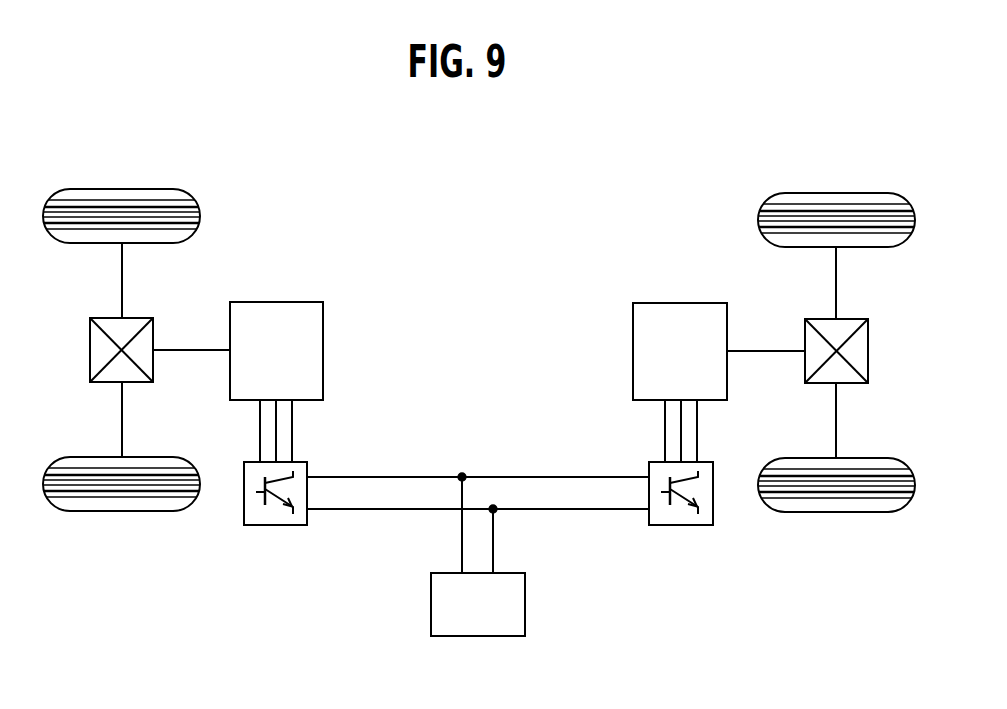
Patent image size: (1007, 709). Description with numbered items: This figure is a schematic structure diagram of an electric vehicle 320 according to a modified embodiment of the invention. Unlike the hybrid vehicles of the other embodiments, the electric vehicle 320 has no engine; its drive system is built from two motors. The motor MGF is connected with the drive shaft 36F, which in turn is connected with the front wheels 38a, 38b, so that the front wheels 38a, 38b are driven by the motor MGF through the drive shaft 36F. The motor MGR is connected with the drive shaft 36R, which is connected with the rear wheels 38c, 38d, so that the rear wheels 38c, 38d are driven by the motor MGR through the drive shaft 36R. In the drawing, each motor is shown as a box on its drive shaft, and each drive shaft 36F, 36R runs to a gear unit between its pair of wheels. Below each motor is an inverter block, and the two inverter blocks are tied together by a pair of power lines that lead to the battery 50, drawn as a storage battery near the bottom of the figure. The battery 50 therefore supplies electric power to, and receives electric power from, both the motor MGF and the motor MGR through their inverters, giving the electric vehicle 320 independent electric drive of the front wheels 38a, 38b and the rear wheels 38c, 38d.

The electric vehicle 320 is at (564, 160).
The front wheel 38a is at (838, 193).
The front wheel 38b is at (838, 512).
The rear wheel 38c is at (120, 189).
The rear wheel 38d is at (127, 511).
The drive shaft 36R is at (183, 350).
The drive shaft 36F is at (758, 351).
The motor MGR is at (277, 302).
The motor MGF is at (680, 304).
The battery 50 is at (525, 603).